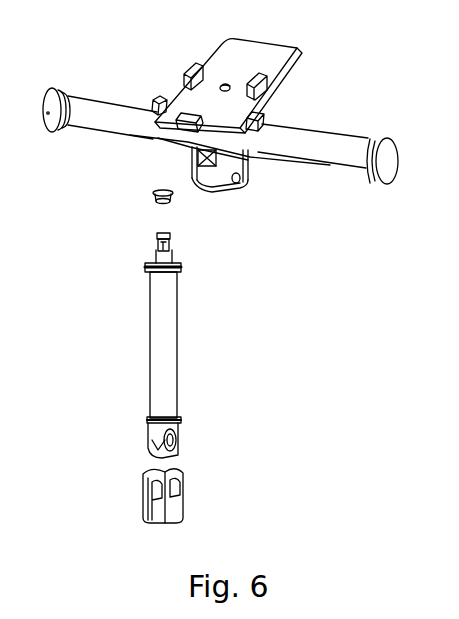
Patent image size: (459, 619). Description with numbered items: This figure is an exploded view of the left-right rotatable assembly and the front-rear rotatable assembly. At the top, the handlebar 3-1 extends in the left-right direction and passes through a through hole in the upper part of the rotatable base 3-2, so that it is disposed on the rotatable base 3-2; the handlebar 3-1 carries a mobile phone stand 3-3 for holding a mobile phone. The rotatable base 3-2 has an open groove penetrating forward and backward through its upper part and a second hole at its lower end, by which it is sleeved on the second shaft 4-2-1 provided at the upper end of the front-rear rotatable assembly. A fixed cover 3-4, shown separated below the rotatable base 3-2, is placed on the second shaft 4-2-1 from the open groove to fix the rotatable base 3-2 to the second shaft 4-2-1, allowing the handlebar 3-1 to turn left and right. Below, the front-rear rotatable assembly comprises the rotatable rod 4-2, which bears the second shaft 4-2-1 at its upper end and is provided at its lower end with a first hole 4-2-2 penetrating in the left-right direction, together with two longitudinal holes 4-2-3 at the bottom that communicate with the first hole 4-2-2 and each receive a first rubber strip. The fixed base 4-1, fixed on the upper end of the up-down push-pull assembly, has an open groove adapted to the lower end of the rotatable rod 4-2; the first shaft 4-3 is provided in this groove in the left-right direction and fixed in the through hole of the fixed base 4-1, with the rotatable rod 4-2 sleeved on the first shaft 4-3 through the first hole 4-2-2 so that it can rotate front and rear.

The handlebar 3-1 is at (302, 145).
The rotatable base 3-2 is at (235, 165).
The mobile phone stand 3-3 is at (232, 63).
The fixed cover 3-4 is at (155, 202).
The fixed base 4-1 is at (172, 508).
The rotatable rod 4-2 is at (163, 318).
The second shaft 4-2-1 is at (170, 247).
The first hole 4-2-2 is at (172, 442).
The longitudinal hole 4-2-3 is at (158, 457).
The first shaft 4-3 is at (148, 495).